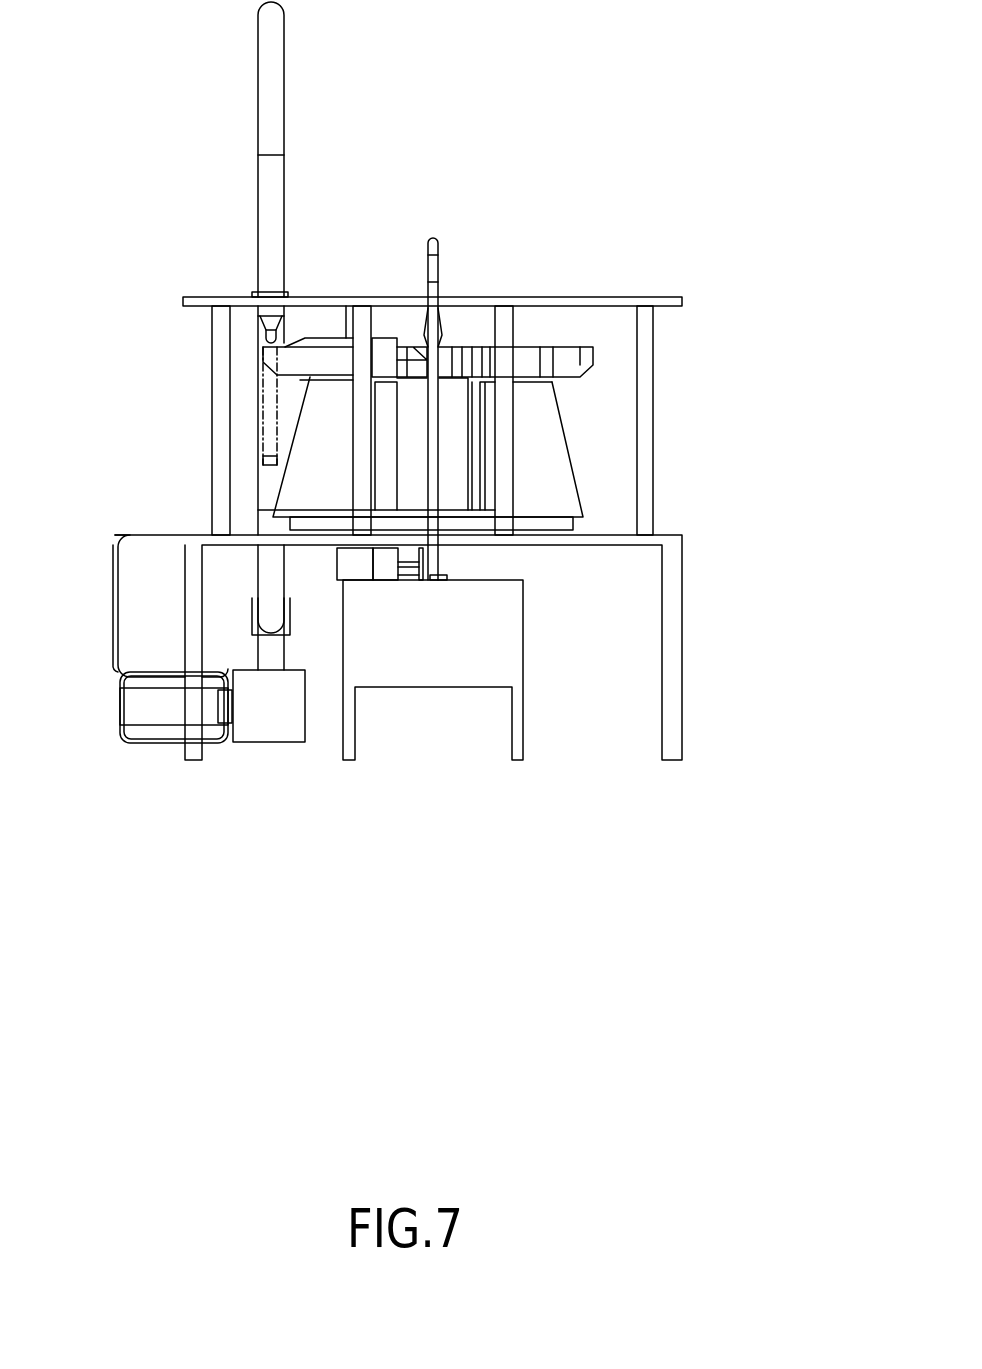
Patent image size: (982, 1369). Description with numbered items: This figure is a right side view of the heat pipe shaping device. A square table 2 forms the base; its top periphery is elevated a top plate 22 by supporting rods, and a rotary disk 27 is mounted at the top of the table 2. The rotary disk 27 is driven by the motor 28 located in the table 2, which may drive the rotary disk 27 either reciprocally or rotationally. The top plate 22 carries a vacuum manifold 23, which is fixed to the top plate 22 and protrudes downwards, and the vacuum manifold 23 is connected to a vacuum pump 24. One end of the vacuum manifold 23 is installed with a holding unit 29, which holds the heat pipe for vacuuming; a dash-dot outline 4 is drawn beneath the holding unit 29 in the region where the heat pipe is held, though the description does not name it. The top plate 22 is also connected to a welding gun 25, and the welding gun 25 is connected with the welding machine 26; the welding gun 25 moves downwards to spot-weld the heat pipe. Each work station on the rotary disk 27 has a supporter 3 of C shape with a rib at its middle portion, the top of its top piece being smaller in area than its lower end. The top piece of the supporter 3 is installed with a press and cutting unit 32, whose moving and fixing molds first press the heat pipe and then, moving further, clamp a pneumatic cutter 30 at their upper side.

The table 2 is at (670, 648).
The supporter 3 is at (315, 449).
The tube 4 is at (265, 395).
The top plate 22 is at (572, 297).
The vacuum manifold 23 is at (273, 82).
The vacuum pump 24 is at (255, 730).
The welding gun 25 is at (434, 238).
The welding machine 26 is at (437, 662).
The rotary disk 27 is at (565, 523).
The motor 28 is at (348, 565).
The holding unit 29 is at (266, 331).
The pneumatic cutter 30 is at (333, 338).
The press and cutting unit 32 is at (313, 360).